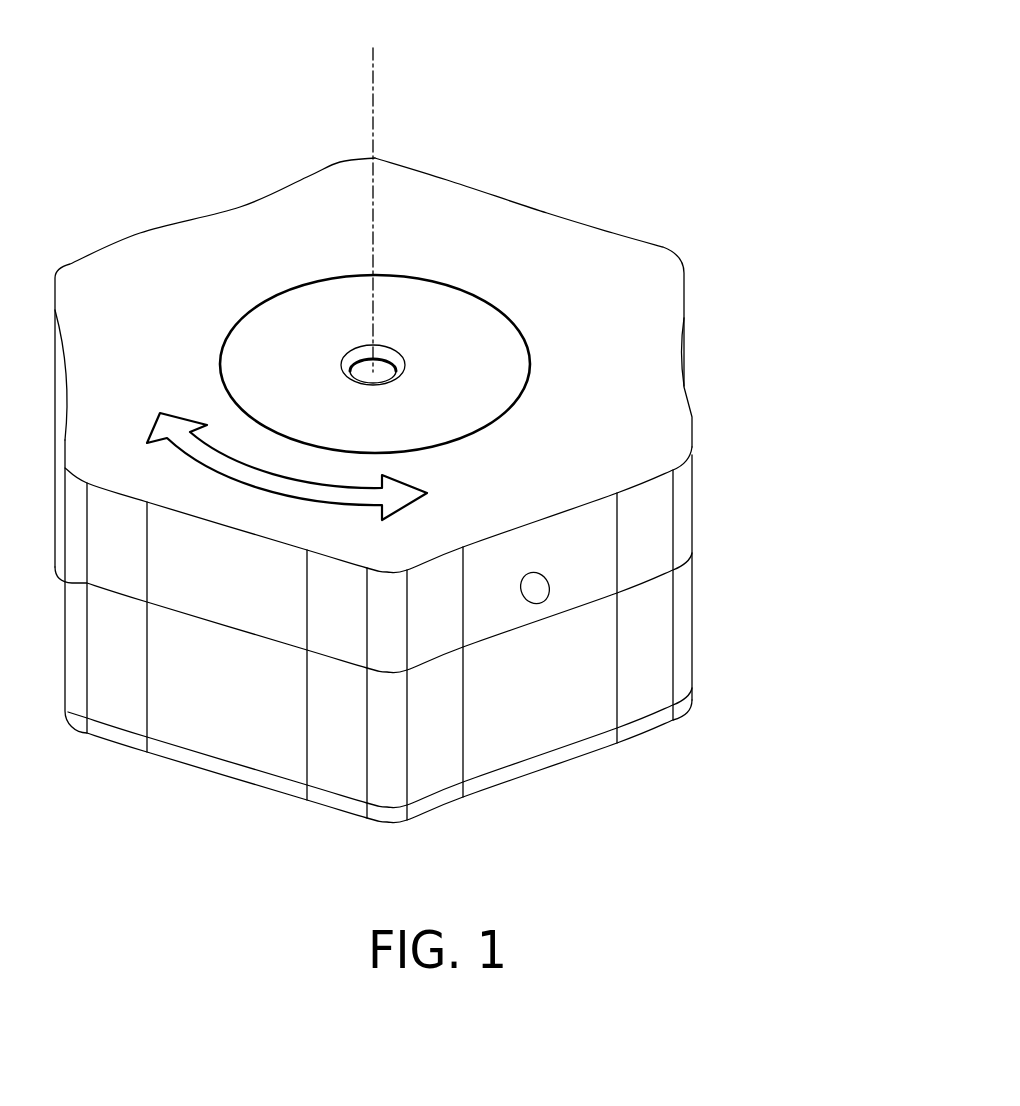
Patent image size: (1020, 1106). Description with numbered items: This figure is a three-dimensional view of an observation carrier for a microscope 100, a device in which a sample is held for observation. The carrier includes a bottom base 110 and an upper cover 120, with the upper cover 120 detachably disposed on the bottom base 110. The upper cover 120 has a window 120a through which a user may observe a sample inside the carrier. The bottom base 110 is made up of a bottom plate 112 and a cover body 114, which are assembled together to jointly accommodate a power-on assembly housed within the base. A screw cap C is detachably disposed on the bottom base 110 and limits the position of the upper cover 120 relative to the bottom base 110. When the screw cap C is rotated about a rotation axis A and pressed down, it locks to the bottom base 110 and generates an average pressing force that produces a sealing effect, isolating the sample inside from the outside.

The observation carrier for a microscope 100 is at (893, 837).
The bottom base 110 is at (811, 670).
The bottom plate 112 is at (652, 722).
The cover body 114 is at (650, 673).
The upper cover 120 is at (487, 373).
The window 120a is at (402, 363).
The rotation axis A is at (373, 88).
The screw cap C is at (628, 360).